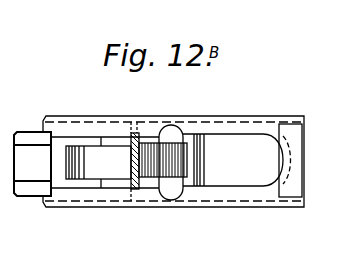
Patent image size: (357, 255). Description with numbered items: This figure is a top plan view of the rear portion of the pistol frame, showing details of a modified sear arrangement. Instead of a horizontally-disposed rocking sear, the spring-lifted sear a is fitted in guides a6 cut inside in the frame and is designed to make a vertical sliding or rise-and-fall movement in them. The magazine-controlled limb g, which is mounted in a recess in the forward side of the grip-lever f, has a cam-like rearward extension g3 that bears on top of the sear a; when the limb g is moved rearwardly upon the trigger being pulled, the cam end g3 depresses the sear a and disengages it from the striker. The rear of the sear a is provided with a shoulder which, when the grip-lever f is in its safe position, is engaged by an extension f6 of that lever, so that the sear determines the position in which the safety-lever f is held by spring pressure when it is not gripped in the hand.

The magazine-controlled limb g is at (80, 172).
The cam-like rearward extension g3 is at (133, 188).
The sear a is at (163, 160).
The guides a6 is at (172, 123).
The grip-lever f is at (233, 160).
The extension of the lever f6 is at (198, 133).